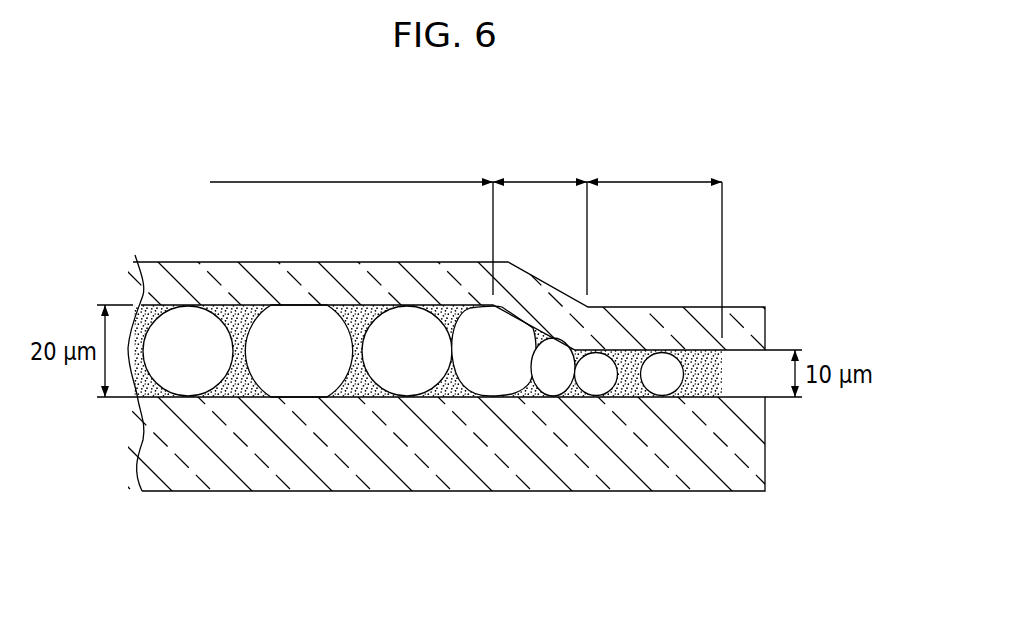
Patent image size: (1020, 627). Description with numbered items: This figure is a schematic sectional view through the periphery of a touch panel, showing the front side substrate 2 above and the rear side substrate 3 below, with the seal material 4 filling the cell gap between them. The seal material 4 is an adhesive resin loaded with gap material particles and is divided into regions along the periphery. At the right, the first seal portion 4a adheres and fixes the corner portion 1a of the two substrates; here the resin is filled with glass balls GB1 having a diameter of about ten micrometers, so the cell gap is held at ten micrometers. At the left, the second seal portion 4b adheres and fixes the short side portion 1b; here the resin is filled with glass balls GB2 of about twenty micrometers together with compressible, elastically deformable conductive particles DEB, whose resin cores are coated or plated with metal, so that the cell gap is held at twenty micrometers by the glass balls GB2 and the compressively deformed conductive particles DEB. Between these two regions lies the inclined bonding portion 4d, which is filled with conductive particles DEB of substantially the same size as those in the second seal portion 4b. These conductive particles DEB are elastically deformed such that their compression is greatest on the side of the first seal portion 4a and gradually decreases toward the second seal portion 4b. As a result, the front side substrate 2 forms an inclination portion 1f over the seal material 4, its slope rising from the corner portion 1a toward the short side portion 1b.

The front side substrate 2 is at (233, 278).
The rear side substrate 3 is at (605, 462).
The seal material 4 is at (428, 428).
The first seal portion 4a is at (698, 387).
The second seal portion 4b is at (355, 378).
The inclined bonding portion 4d is at (533, 392).
The corner portion 1a is at (654, 232).
The short side portion 1b is at (351, 210).
The inclination portion 1f is at (542, 180).
The glass balls GB1 is at (662, 377).
The glass balls GB2 is at (188, 372).
The conductive particles DEB is at (300, 372).